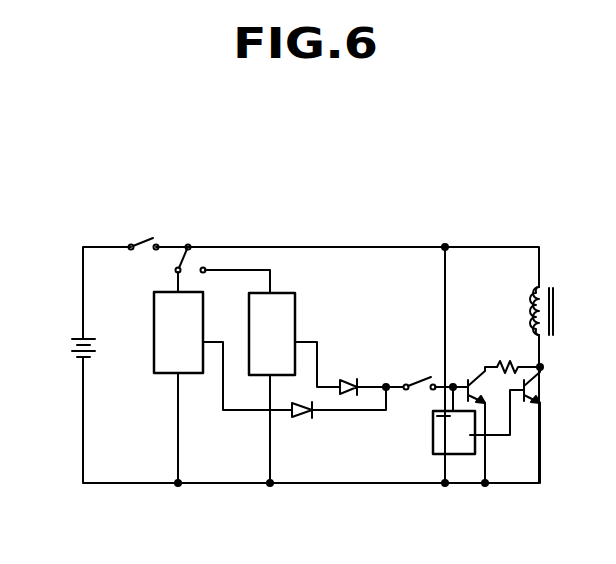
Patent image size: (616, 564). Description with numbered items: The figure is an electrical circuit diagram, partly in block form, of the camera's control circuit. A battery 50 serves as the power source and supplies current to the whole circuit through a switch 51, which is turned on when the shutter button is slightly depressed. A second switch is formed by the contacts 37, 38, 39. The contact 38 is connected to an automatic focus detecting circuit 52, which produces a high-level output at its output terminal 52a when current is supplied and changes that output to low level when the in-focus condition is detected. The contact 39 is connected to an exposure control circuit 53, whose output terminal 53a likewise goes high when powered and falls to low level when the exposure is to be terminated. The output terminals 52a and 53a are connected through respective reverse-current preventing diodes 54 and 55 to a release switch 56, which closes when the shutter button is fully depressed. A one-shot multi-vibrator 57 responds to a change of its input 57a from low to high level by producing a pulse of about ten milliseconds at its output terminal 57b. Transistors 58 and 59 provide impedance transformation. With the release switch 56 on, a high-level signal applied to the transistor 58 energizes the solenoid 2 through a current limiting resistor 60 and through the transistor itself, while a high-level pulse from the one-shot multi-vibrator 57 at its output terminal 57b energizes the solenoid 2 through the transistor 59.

The solenoid 2 is at (535, 295).
The contact 37 is at (190, 256).
The contact 38 is at (174, 267).
The contact 39 is at (205, 268).
The battery 50 is at (70, 350).
The switch 51 is at (157, 241).
The automatic focus detecting circuit 52 is at (158, 350).
The output terminal 52a is at (208, 345).
The exposure control circuit 53 is at (280, 300).
The output terminal 53a is at (307, 338).
The reverse-current preventing diode 54 is at (303, 418).
The reverse-current preventing diode 55 is at (350, 395).
The release switch 56 is at (425, 380).
The one-shot multi-vibrator 57 is at (460, 443).
The input 57a is at (440, 414).
The output terminal 57b is at (483, 438).
The transistor 58 is at (473, 378).
The transistor 59 is at (545, 388).
The current limiting resistor 60 is at (501, 363).